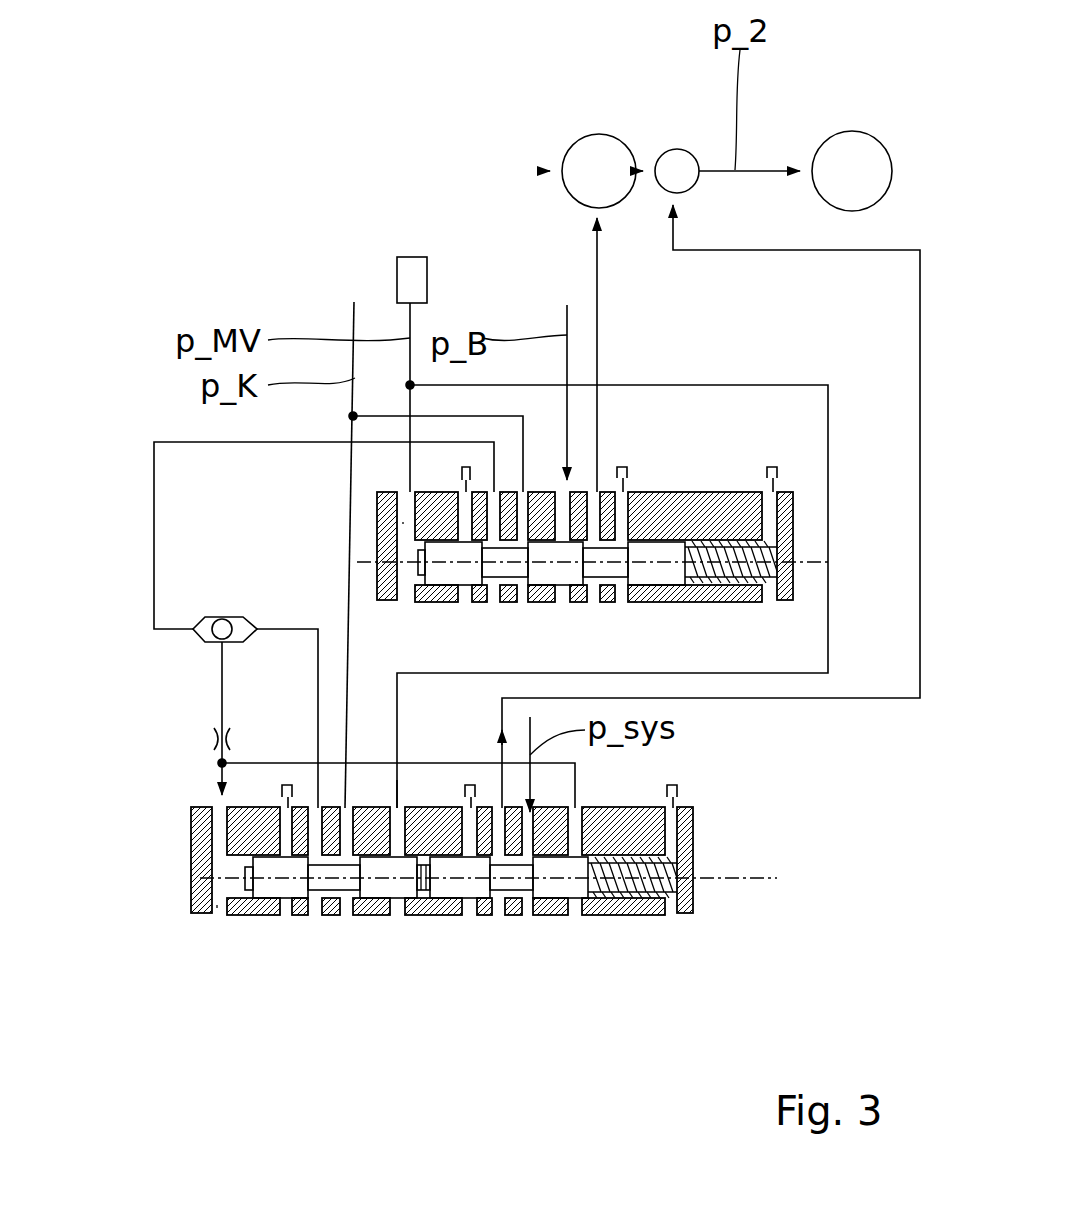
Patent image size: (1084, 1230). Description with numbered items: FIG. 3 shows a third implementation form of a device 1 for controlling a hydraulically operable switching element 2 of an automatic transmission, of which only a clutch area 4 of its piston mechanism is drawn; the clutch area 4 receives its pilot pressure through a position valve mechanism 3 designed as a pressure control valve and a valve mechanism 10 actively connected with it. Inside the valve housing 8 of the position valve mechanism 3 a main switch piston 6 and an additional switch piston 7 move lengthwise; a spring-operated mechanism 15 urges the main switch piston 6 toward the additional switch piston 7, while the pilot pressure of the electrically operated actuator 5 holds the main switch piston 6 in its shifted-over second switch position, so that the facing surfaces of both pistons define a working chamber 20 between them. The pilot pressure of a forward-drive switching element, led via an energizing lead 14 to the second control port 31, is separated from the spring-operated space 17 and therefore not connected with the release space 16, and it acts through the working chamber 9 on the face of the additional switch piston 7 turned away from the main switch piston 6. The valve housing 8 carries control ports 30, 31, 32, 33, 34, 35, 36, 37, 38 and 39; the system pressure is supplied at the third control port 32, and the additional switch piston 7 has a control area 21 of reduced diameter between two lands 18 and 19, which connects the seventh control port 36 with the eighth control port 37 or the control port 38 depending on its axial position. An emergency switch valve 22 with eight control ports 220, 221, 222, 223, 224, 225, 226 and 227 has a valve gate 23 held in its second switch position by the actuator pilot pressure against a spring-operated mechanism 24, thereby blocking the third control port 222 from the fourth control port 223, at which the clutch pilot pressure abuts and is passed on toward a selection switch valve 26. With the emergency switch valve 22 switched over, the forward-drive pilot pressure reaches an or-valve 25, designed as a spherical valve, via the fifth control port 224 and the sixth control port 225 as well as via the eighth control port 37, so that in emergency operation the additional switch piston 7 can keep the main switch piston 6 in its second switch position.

The device 1 is at (142, 362).
The switching element 2 is at (867, 137).
The position valve mechanism 3 is at (697, 838).
The clutch area 4 is at (838, 168).
The actuator 5 is at (410, 280).
The main switch piston 6 is at (555, 885).
The additional switch piston 7 is at (258, 906).
The valve housing 8 is at (193, 905).
The working chamber 9 is at (222, 842).
The valve mechanism 10 is at (676, 165).
The energizing lead 14 is at (260, 764).
The spring-operated mechanism 15 is at (633, 890).
The release space 16 is at (773, 465).
The spring-operated space 17 is at (605, 890).
The land 18 is at (380, 890).
The land 19 is at (287, 890).
The working chamber 20 is at (423, 900).
The control area 21 is at (318, 883).
The emergency switch valve 22 is at (797, 578).
The valve gate 23 is at (653, 570).
The spring-operated mechanism 24 is at (740, 577).
The or-valve 25 is at (203, 633).
The selection switch valve 26 is at (540, 171).
The control port 30 is at (673, 903).
The second control port 31 is at (575, 907).
The third control port 32 is at (527, 907).
The control port 33 is at (497, 907).
The control port 34 is at (468, 907).
The control port 35 is at (397, 823).
The seventh control port 36 is at (342, 907).
The eighth control port 37 is at (312, 828).
The control port 38 is at (280, 907).
The control port 39 is at (217, 907).
The control port 220 is at (770, 503).
The control port 221 is at (623, 490).
The third control port 222 is at (590, 510).
The fourth control port 223 is at (563, 593).
The fifth control port 224 is at (520, 590).
The sixth control port 225 is at (493, 590).
The control port 226 is at (467, 590).
The control port 227 is at (403, 522).